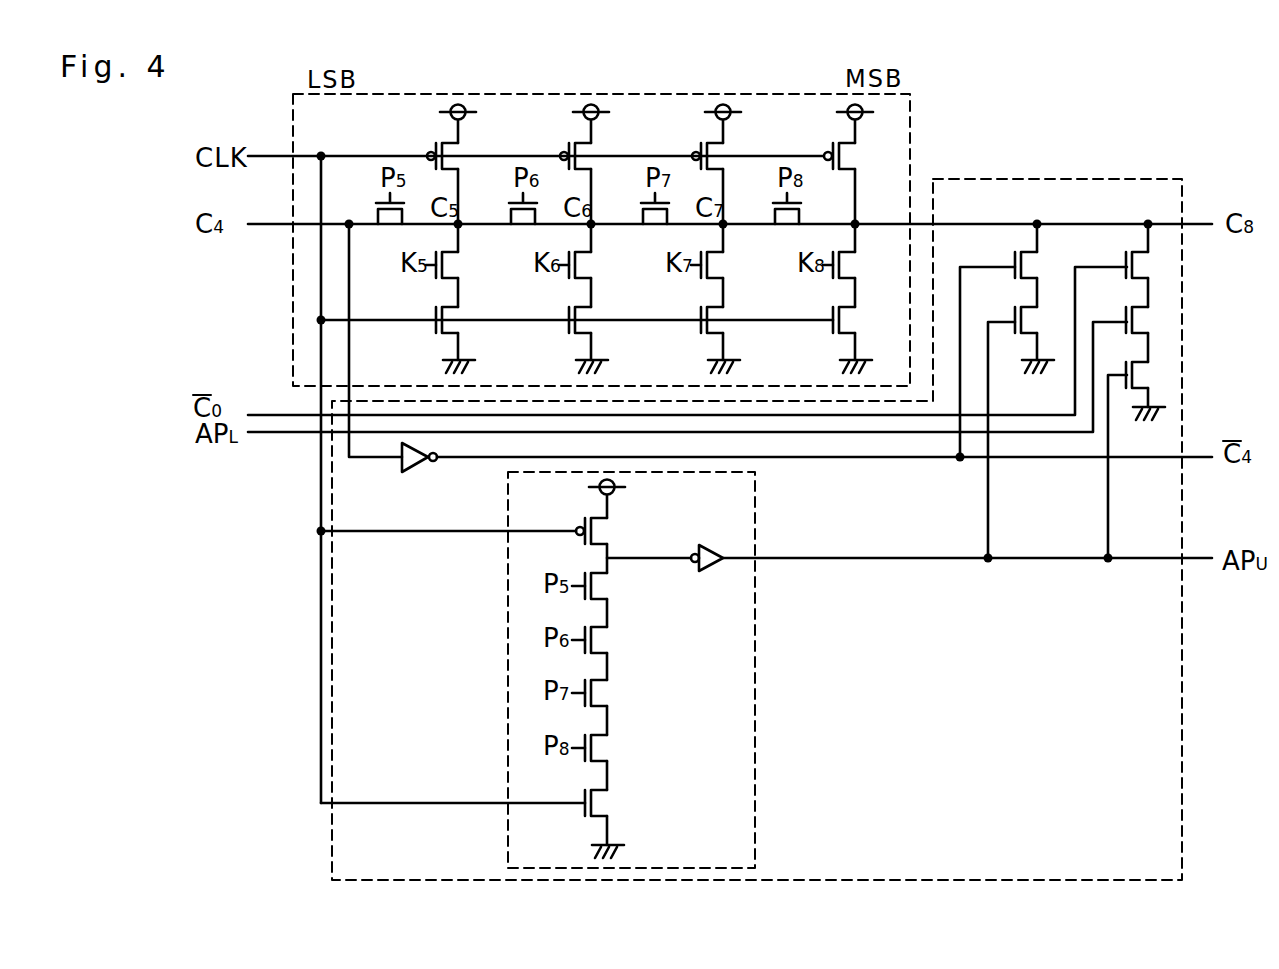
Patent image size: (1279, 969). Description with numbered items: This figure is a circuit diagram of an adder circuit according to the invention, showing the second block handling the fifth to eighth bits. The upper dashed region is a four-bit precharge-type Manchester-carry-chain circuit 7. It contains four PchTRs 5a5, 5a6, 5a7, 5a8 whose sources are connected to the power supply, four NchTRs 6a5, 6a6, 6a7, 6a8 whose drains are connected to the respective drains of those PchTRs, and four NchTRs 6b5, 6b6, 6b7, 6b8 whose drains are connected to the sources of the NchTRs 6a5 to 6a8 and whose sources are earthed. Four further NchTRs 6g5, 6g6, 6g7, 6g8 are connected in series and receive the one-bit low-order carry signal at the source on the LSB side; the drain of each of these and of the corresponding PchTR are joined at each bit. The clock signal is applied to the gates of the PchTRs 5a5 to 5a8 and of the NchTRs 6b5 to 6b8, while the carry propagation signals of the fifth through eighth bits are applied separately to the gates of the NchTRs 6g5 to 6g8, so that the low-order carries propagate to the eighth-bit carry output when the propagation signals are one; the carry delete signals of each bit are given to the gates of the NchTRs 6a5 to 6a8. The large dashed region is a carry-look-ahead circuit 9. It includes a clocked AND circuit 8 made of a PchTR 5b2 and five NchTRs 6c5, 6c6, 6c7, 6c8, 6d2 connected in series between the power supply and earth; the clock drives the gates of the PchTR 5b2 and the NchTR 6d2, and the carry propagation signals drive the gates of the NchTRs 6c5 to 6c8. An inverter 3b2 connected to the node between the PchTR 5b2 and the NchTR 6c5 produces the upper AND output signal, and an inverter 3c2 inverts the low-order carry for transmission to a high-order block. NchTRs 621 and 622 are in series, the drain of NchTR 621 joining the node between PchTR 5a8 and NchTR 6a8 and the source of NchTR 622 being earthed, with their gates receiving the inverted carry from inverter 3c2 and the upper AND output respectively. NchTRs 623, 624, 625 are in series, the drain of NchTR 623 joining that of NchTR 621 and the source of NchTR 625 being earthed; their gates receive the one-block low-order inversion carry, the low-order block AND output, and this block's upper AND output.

The PchTR 5a5 is at (427, 153).
The PchTR 5a6 is at (560, 153).
The PchTR 5a7 is at (692, 153).
The PchTR 5a8 is at (824, 153).
The NchTR 6g5 is at (390, 223).
The NchTR 6g6 is at (523, 223).
The NchTR 6g7 is at (655, 223).
The NchTR 6g8 is at (787, 223).
The NchTR 6a5 is at (460, 270).
The NchTR 6a6 is at (593, 270).
The NchTR 6a7 is at (725, 270).
The NchTR 6a8 is at (883, 262).
The NchTR 6b5 is at (460, 325).
The NchTR 6b6 is at (593, 325).
The NchTR 6b7 is at (725, 325).
The NchTR 6b8 is at (883, 317).
The Manchester-carry-chain circuit 7 is at (910, 137).
The NchTR 621 is at (1030, 268).
The NchTR 622 is at (1020, 342).
The NchTR 623 is at (1150, 268).
The NchTR 624 is at (1150, 323).
The NchTR 625 is at (1150, 378).
The inverter 3c2 is at (413, 466).
The inverter 3b2 is at (713, 567).
The PchTR 5b2 is at (610, 527).
The NchTR 6c5 is at (610, 583).
The NchTR 6c6 is at (610, 637).
The NchTR 6c7 is at (610, 692).
The NchTR 6c8 is at (610, 747).
The NchTR 6d2 is at (610, 800).
The clocked AND circuit 8 is at (755, 703).
The carry-look-ahead circuit 9 is at (1182, 776).